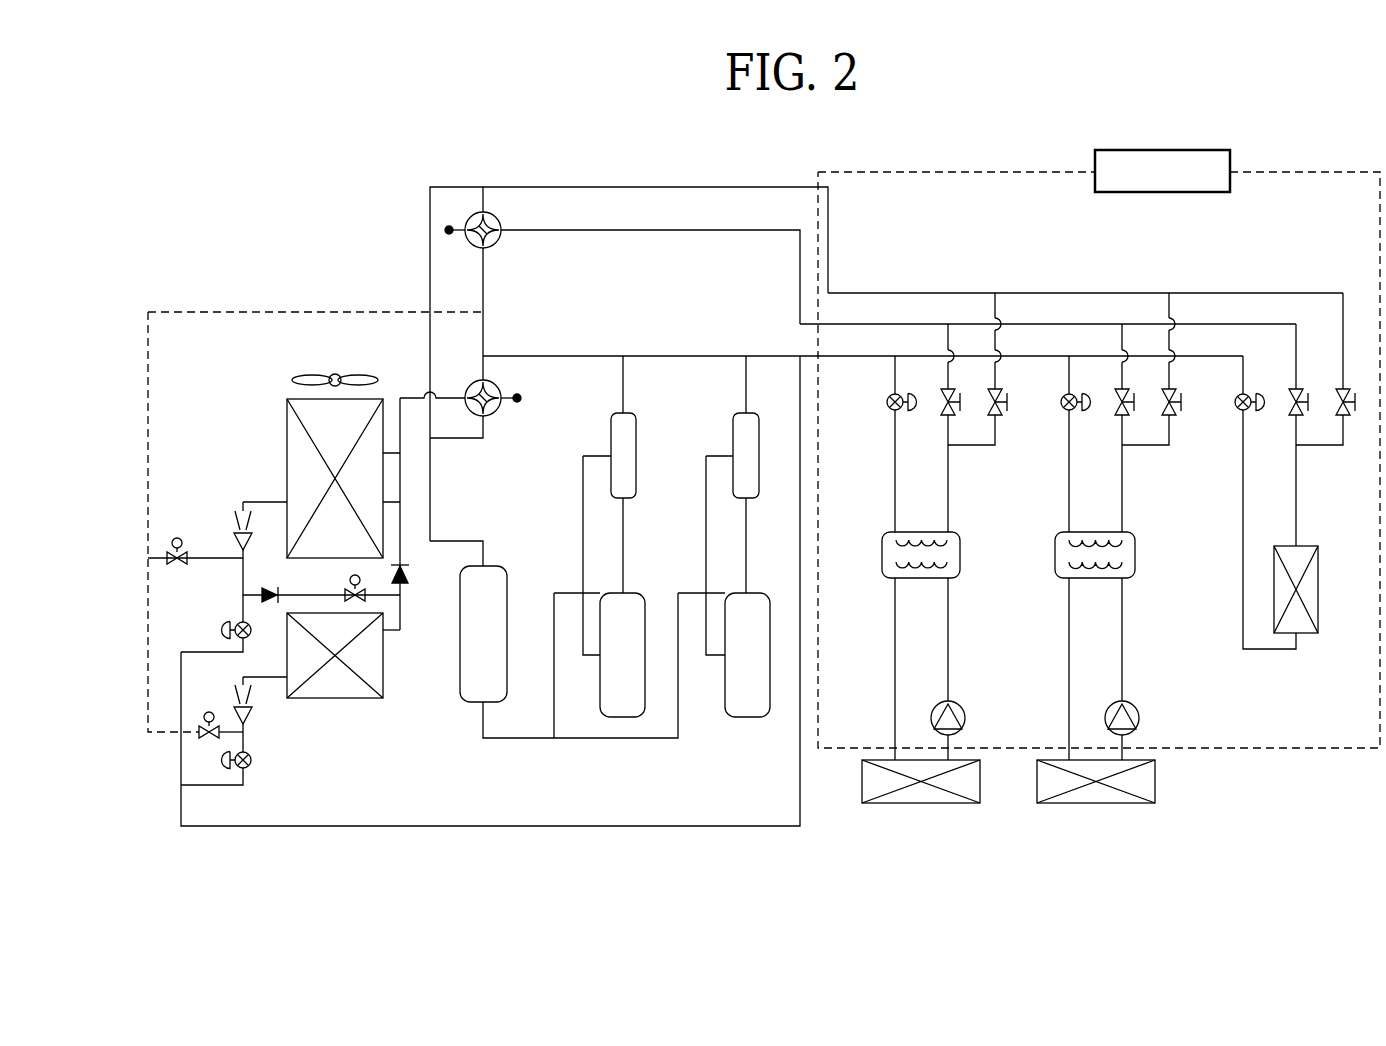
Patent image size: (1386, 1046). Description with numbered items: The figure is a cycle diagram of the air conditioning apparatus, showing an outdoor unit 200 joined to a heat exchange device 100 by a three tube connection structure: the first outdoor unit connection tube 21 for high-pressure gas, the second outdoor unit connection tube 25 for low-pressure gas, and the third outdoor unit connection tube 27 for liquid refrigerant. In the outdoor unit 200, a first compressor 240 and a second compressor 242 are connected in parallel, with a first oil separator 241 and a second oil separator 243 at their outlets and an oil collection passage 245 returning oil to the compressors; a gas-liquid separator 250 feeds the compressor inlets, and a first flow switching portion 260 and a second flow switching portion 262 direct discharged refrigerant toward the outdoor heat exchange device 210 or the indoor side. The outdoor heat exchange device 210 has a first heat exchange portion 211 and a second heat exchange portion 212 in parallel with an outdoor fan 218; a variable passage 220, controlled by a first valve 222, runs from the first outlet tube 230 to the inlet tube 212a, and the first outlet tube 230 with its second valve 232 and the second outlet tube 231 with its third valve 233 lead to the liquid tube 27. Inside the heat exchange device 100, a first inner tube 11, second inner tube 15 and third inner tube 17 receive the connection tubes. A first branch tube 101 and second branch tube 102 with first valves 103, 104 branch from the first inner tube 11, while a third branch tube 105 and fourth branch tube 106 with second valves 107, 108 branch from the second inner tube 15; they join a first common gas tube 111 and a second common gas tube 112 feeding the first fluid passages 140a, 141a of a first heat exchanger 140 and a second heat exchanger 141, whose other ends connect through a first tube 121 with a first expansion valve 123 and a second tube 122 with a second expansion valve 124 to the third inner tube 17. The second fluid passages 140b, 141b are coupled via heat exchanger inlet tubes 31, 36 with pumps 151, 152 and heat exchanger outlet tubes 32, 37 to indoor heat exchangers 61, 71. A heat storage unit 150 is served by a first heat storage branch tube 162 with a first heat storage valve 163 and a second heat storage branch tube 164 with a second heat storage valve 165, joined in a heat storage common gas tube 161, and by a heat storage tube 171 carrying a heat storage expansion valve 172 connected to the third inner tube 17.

The heat exchange device 100 is at (1160, 136).
The outdoor unit 200 is at (394, 207).
The second outdoor unit connection tube 25 is at (671, 186).
The first outdoor unit connection tube 21 is at (633, 232).
The third outdoor unit connection tube 27 is at (674, 828).
The second inner tube 15 is at (1305, 292).
The first inner tube 11 is at (1246, 323).
The third inner tube 17 is at (1196, 355).
The second heat storage branch tube 164 is at (1344, 318).
The first heat storage branch tube 162 is at (1297, 348).
The fourth branch tube 106 is at (1170, 305).
The third branch tube 105 is at (996, 336).
The first branch tube 101 is at (947, 338).
The second branch tube 102 is at (1121, 338).
The outdoor heat exchange device 210 is at (245, 416).
The outdoor fan 218 is at (298, 374).
The first heat exchange portion 211 is at (286, 443).
The first outlet tube 230 is at (243, 501).
The variable passage 220 is at (297, 594).
The first valve 222 is at (351, 580).
The second valve 232 is at (237, 624).
The inlet tube 212a is at (401, 612).
The second heat exchange portion 212 is at (323, 699).
The second outlet tube 231 is at (271, 678).
The third valve 233 is at (252, 762).
The first flow switching portion 260 is at (499, 241).
The second flow switching portion 262 is at (499, 409).
The first oil separator 241 is at (637, 472).
The second oil separator 243 is at (760, 472).
The oil collection passage 245 is at (706, 549).
The gas-liquid separator 250 is at (508, 610).
The first compressor 240 is at (623, 718).
The second compressor 242 is at (747, 718).
The first expansion valve 123 is at (901, 409).
The first valve 103 is at (956, 409).
The second valve 107 is at (1000, 412).
The second expansion valve 124 is at (1075, 409).
The first valve 104 is at (1130, 409).
The second valve 108 is at (1174, 412).
The heat storage expansion valve 172 is at (1249, 409).
The first heat storage valve 163 is at (1304, 409).
The second heat storage valve 165 is at (1348, 412).
The first tube 121 is at (894, 505).
The first common gas tube 111 is at (949, 505).
The second tube 122 is at (1068, 505).
The second common gas tube 112 is at (1123, 505).
The heat storage tube 171 is at (1242, 505).
The heat storage common gas tube 161 is at (1297, 505).
The first fluid passage 140a is at (961, 545).
The second fluid passage 140b is at (882, 563).
The first heat exchanger 140 is at (882, 576).
The first fluid passage 141a is at (1136, 548).
The second fluid passage 141b is at (1055, 570).
The second heat exchanger 141 is at (1136, 578).
The heat storage unit 150 is at (1319, 588).
The heat exchanger outlet tube 32 is at (894, 653).
The heat exchanger inlet tube 31 is at (949, 653).
The heat exchanger outlet tube 37 is at (1068, 653).
The heat exchanger inlet tube 36 is at (1123, 653).
The pump 151 is at (965, 718).
The pump 152 is at (1139, 718).
The indoor heat exchanger 61 is at (981, 781).
The indoor heat exchanger 71 is at (1156, 781).